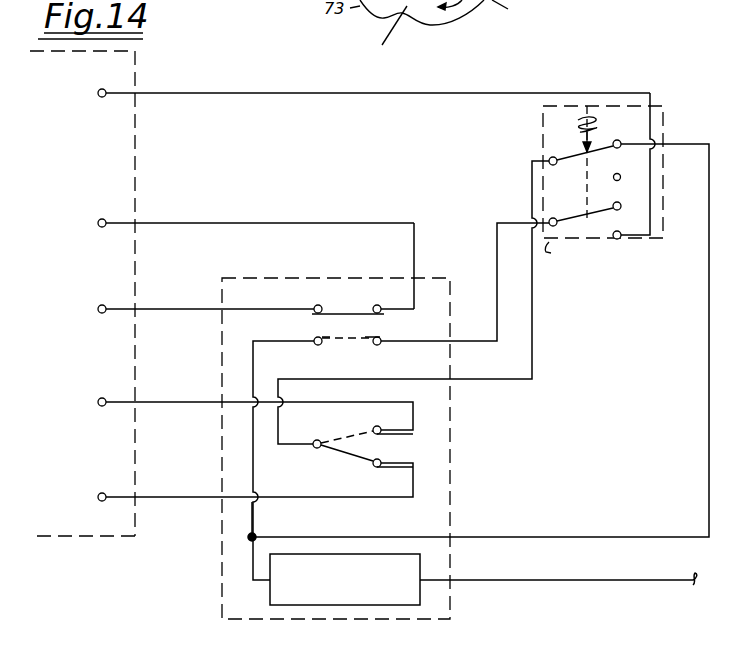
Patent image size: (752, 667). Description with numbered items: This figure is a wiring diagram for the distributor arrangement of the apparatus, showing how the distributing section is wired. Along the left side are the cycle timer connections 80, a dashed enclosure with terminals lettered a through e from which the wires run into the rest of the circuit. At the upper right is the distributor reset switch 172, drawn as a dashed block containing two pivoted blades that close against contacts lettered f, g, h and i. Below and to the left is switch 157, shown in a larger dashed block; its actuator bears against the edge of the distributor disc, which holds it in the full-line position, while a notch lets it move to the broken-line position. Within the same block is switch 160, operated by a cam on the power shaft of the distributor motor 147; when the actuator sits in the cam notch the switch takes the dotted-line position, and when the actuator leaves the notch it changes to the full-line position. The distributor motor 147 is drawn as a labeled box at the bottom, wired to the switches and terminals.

The cycle timer connections 80 is at (118, 71).
The distributor reset switch 172 is at (566, 165).
The switch 157 is at (338, 312).
The switch 160 is at (372, 453).
The distributor motor 147 is at (424, 577).